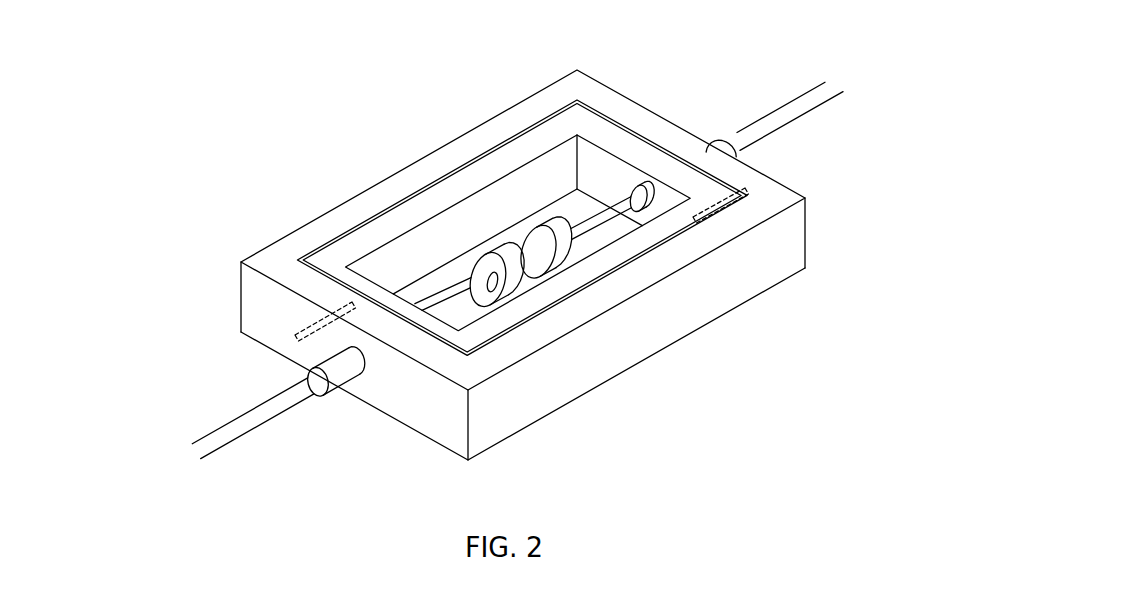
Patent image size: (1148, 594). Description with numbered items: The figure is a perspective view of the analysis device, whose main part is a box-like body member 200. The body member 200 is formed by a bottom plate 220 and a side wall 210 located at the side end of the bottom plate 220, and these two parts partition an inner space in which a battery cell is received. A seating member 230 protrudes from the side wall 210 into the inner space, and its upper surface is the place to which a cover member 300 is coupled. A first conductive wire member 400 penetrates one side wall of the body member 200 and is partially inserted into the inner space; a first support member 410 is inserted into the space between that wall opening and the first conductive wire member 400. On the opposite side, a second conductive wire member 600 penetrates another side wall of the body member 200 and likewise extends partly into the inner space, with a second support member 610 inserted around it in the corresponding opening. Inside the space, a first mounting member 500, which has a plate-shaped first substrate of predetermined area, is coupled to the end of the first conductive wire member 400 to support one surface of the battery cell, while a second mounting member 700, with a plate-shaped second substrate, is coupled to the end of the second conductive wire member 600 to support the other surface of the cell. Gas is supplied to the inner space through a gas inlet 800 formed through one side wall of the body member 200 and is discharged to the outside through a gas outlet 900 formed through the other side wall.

The body member 200 is at (274, 199).
The side wall 210 is at (451, 153).
The bottom plate 220 is at (566, 208).
The seating member 230 is at (413, 212).
The cover member 300 is at (422, 252).
The first conductive wire member 400 is at (240, 423).
The first support member 410 is at (350, 372).
The first mounting member 500 is at (514, 290).
The second conductive wire member 600 is at (789, 108).
The second support member 610 is at (720, 138).
The second mounting member 700 is at (566, 262).
The gas inlet 800 is at (295, 337).
The gas outlet 900 is at (747, 186).